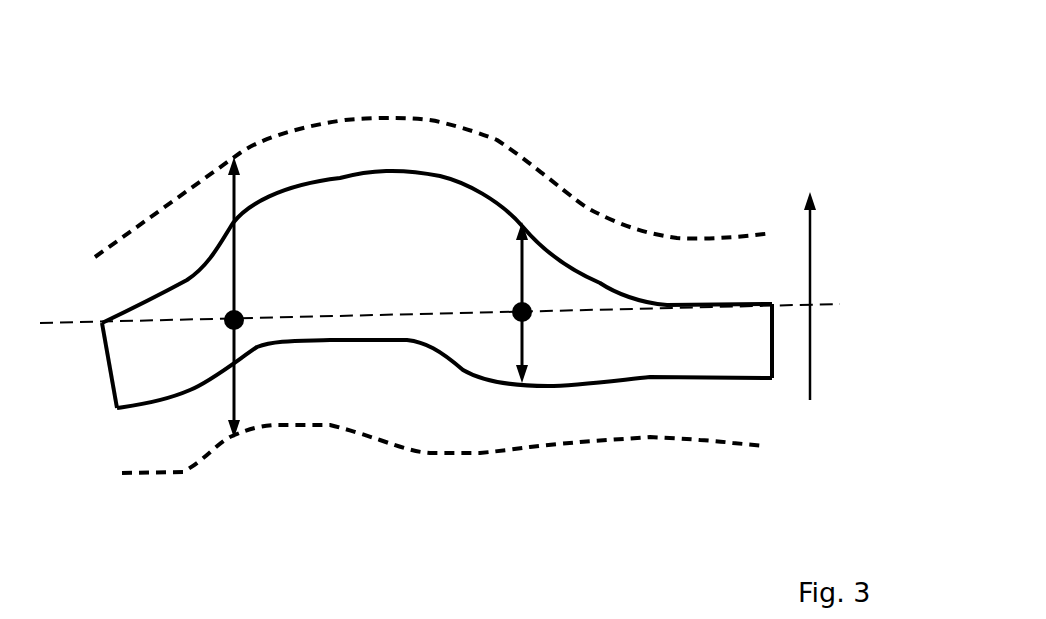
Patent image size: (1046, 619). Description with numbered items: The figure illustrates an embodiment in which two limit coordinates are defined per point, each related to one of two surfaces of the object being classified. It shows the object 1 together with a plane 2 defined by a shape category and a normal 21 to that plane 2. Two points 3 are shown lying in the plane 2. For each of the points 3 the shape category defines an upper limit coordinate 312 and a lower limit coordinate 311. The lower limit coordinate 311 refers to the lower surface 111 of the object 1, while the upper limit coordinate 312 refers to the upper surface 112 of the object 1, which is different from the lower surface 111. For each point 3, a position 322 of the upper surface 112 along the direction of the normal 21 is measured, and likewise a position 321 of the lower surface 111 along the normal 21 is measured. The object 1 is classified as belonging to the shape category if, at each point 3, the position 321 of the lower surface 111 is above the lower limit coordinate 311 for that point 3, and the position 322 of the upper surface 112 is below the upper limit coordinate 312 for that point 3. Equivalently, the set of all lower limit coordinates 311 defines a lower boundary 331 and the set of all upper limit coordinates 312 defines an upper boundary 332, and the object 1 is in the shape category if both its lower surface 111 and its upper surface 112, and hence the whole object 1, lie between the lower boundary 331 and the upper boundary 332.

The object 1 is at (425, 333).
The plane 2 is at (93, 322).
The points 3 is at (225, 316).
The normal 21 is at (810, 358).
The lower surface 111 is at (147, 407).
The upper surface 112 is at (500, 198).
The lower limit coordinate 311 is at (237, 405).
The upper limit coordinate 312 is at (233, 197).
The position of lower surface 321 is at (523, 338).
The position of upper surface 322 is at (522, 272).
The lower boundary 331 is at (410, 445).
The upper boundary 332 is at (345, 120).